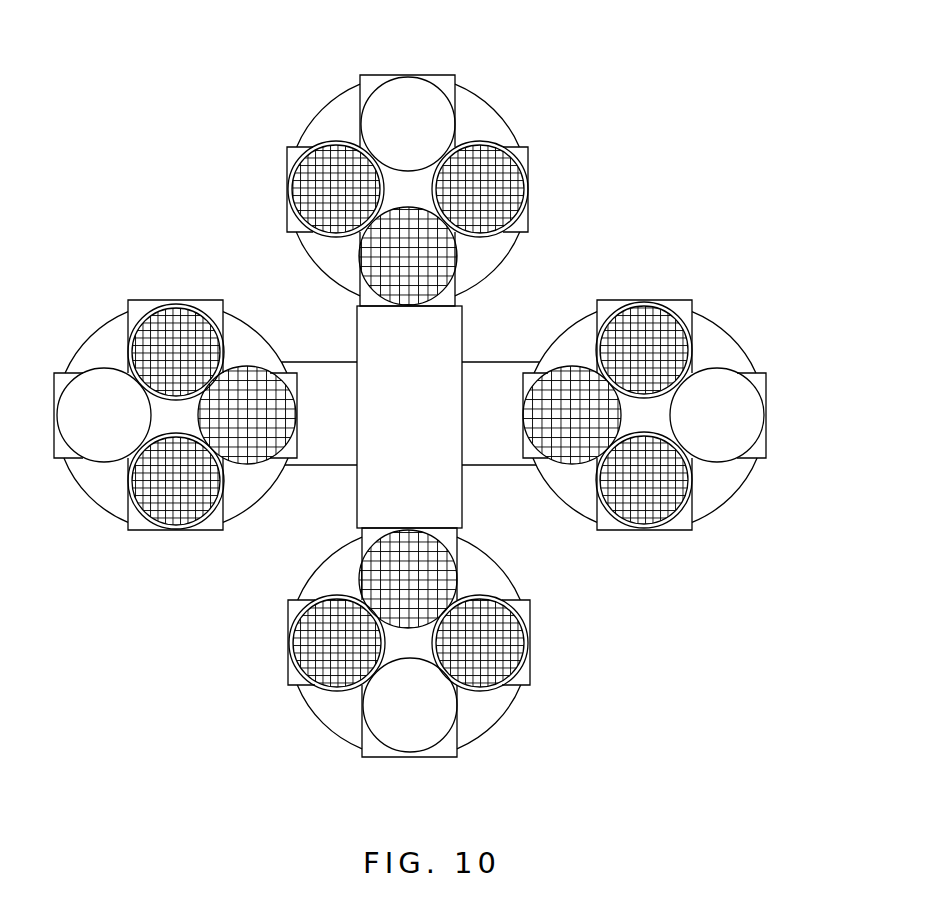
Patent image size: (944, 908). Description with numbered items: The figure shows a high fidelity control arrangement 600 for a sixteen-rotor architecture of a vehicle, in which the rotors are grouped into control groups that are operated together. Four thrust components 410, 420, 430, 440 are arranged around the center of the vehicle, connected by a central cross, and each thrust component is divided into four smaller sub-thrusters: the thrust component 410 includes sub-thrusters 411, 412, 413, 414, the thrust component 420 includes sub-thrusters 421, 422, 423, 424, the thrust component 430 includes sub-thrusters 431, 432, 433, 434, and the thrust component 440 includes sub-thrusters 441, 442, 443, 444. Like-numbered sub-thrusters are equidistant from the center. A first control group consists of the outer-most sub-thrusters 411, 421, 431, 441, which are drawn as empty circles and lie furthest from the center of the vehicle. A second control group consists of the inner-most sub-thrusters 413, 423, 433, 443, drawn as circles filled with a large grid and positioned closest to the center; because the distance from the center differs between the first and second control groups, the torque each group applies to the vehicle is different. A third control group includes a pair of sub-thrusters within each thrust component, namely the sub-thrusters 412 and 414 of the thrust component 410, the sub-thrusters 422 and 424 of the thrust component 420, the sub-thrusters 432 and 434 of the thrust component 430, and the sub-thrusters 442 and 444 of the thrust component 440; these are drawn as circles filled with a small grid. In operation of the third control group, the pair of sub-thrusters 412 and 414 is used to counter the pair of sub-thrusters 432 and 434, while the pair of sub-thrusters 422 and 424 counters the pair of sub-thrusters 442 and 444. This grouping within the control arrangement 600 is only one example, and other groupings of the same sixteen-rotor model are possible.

The control arrangement 600 is at (649, 96).
The thrust component 410 is at (92, 329).
The sub-thruster 411 is at (102, 415).
The sub-thruster 412 is at (176, 350).
The sub-thruster 413 is at (247, 415).
The sub-thruster 414 is at (176, 481).
The thrust component 420 is at (493, 101).
The sub-thruster 421 is at (407, 123).
The sub-thruster 422 is at (335, 189).
The sub-thruster 423 is at (408, 256).
The sub-thruster 424 is at (480, 189).
The thrust component 430 is at (725, 326).
The sub-thruster 431 is at (718, 415).
The sub-thruster 432 is at (644, 349).
The sub-thruster 433 is at (572, 415).
The sub-thruster 434 is at (644, 481).
The thrust component 440 is at (493, 558).
The sub-thruster 441 is at (409, 707).
The sub-thruster 442 is at (336, 643).
The sub-thruster 443 is at (408, 578).
The sub-thruster 444 is at (481, 643).